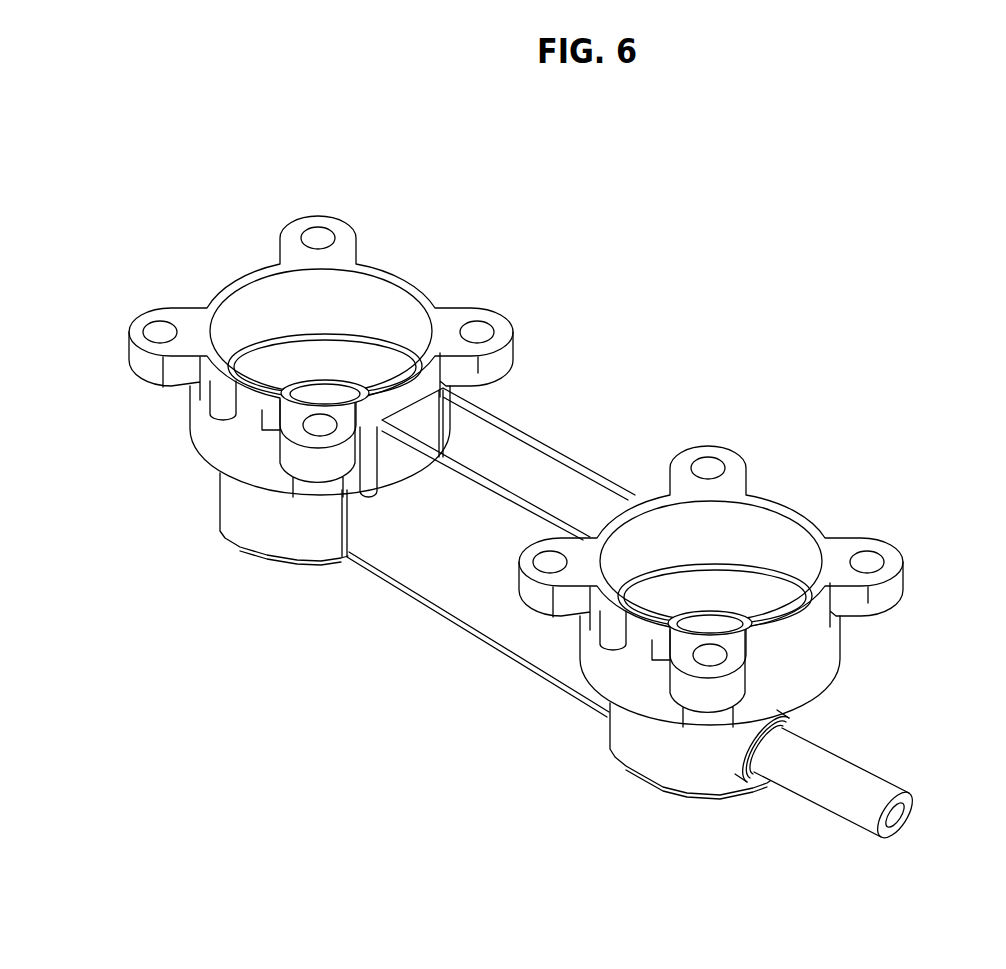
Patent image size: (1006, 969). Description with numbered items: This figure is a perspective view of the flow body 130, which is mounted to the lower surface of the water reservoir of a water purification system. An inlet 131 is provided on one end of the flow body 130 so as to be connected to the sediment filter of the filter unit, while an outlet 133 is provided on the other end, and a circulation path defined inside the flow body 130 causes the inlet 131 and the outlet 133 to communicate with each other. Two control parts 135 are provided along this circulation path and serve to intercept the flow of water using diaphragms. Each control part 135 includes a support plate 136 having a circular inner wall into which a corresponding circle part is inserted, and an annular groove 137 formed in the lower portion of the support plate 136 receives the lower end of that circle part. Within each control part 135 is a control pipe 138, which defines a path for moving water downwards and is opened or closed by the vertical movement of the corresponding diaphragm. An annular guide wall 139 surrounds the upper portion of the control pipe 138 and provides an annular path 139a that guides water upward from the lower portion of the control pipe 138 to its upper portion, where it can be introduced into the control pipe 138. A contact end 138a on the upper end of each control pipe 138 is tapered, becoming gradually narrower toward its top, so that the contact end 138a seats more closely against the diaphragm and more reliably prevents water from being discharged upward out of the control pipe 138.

The flow body 130 is at (622, 228).
The inlet 131 is at (863, 773).
The outlet 133 is at (165, 404).
The control part 135 is at (225, 546).
The support plate 136 is at (214, 433).
The annular groove 137 is at (405, 350).
The control pipe 138 is at (300, 387).
The contact end 138a is at (243, 358).
The annular guide wall 139 is at (368, 366).
The annular path 139a is at (353, 372).